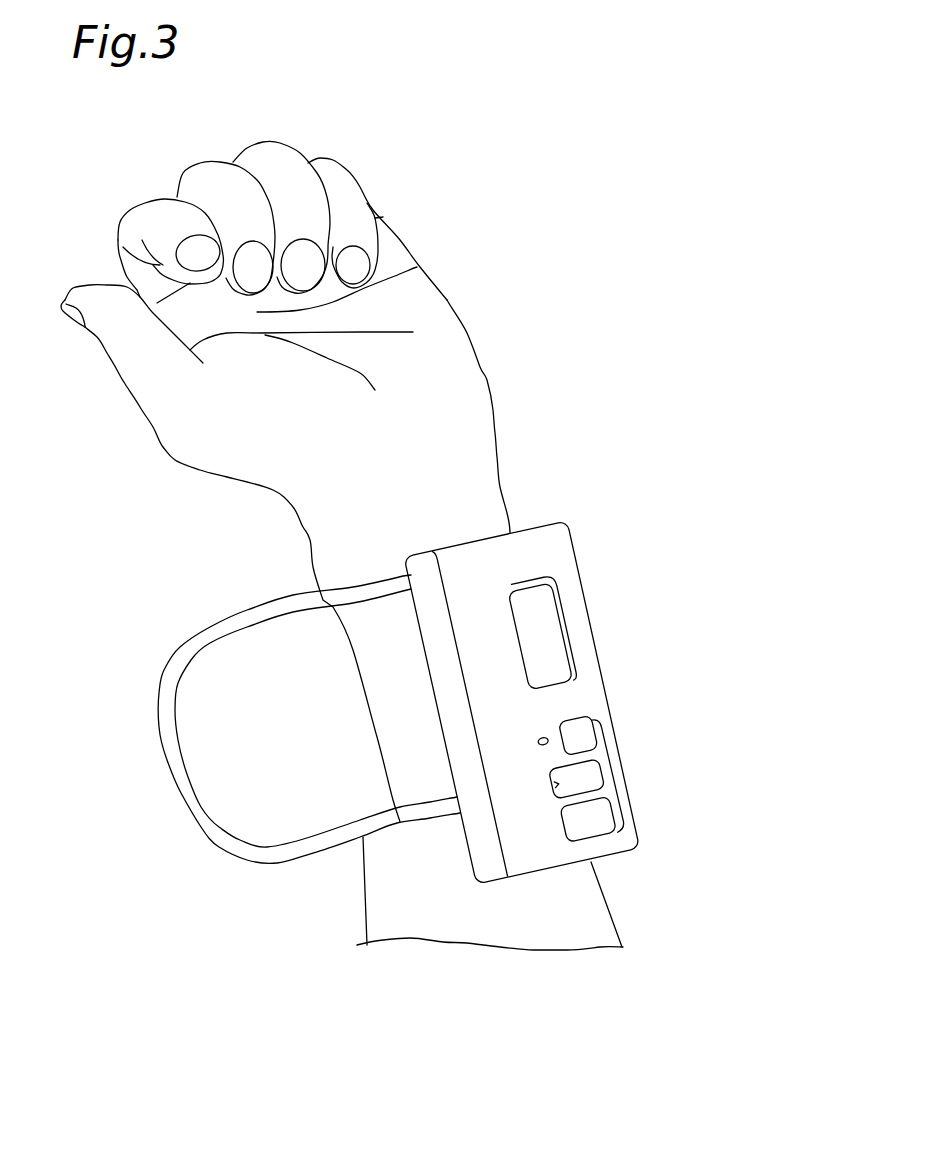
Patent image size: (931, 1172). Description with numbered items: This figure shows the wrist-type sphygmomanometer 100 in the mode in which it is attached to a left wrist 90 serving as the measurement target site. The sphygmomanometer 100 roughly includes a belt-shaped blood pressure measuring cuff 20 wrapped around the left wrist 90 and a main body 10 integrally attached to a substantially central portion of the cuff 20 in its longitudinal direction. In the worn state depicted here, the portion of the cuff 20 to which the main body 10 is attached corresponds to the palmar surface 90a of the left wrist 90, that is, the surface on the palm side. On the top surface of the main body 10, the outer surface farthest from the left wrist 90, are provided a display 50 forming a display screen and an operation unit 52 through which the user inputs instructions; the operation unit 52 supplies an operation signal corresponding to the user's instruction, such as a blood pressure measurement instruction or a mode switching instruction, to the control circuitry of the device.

The wrist-type sphygmomanometer 100 is at (445, 692).
The main body 10 is at (569, 692).
The blood pressure measuring cuff 20 is at (230, 802).
The display 50 is at (557, 597).
The operation unit 52 is at (613, 774).
The left wrist 90 is at (510, 517).
The palmar surface 90a is at (403, 513).